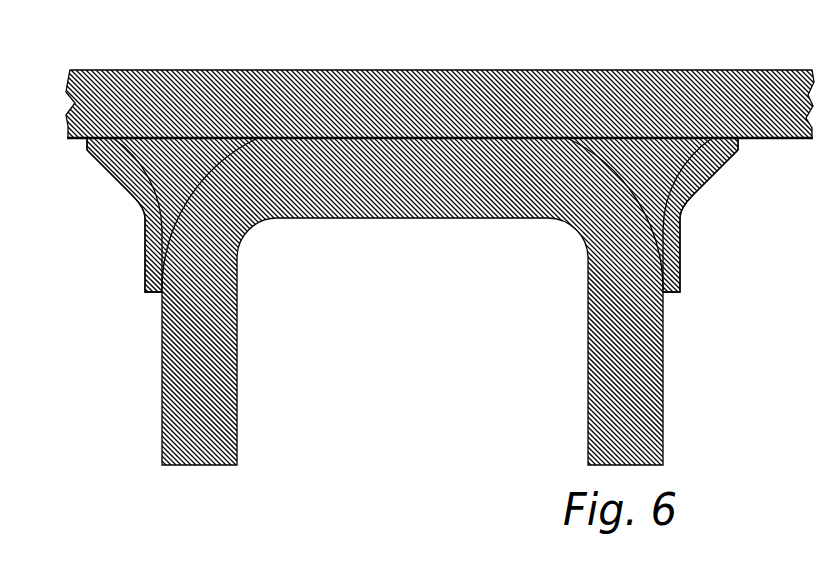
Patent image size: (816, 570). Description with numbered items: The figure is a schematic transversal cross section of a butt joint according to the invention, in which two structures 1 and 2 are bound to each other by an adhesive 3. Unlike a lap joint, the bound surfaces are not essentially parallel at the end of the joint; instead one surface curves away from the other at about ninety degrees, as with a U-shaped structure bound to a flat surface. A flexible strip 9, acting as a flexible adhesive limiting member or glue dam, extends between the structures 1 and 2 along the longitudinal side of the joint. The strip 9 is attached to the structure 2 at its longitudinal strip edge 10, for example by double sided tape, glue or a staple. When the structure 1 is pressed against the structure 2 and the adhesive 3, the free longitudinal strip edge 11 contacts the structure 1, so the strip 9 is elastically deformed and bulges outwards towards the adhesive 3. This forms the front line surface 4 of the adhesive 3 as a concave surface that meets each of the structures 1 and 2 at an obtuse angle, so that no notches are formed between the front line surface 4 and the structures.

The structure 1 is at (470, 82).
The structure 2 is at (190, 368).
The adhesive 3 is at (130, 163).
The front line surface 4 is at (145, 138).
The flexible strip 9 is at (138, 192).
The longitudinal strip edge 10 is at (152, 291).
The free longitudinal strip edge 11 is at (86, 147).